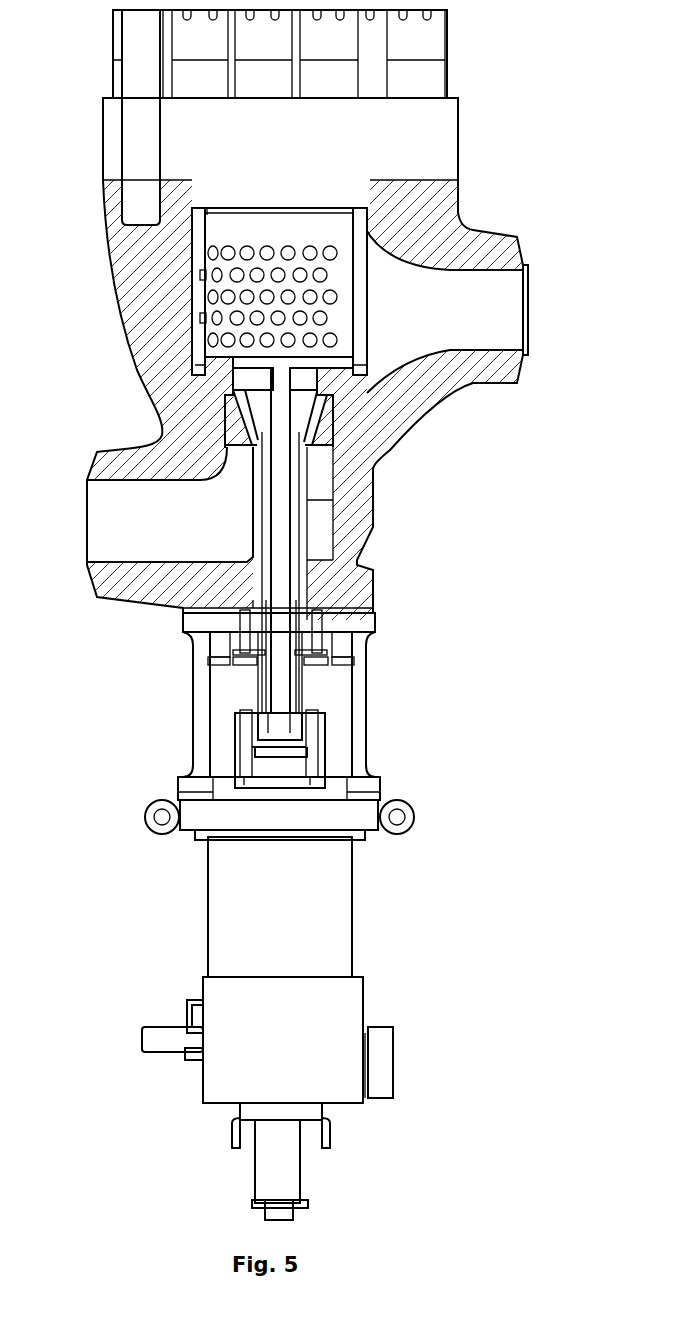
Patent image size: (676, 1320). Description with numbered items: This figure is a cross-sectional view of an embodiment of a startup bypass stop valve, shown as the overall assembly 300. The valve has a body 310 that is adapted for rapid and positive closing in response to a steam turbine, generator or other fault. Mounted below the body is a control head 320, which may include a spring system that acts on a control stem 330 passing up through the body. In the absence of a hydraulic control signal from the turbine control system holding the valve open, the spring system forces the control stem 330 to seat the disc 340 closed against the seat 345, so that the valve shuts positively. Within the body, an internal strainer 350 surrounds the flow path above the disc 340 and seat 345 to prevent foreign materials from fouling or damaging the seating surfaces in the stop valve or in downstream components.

The control valve assembly 300 is at (530, 59).
The body 310 is at (472, 229).
The control head 320 is at (363, 993).
The control stem 330 is at (294, 688).
The disc 340 is at (253, 382).
The seat 345 is at (310, 396).
The internal strainer 350 is at (258, 238).